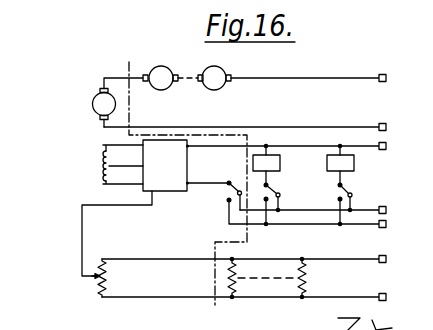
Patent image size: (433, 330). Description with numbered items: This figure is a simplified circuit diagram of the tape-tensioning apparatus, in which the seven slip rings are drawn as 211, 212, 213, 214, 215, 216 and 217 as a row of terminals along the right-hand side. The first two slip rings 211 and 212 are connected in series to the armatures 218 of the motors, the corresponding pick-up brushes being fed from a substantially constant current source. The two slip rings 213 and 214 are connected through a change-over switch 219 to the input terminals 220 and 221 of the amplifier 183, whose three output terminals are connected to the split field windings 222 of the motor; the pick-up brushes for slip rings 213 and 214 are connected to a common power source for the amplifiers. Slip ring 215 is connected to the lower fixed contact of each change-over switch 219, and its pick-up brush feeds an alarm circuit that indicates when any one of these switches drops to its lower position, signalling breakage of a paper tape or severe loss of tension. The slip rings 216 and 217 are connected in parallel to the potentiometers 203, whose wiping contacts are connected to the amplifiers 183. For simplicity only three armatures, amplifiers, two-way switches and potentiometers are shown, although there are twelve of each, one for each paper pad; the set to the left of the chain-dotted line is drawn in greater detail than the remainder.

The amplifier 183 is at (274, 168).
The potentiometer 203 is at (93, 286).
The slip ring 211 is at (322, 78).
The slip ring 212 is at (258, 126).
The slip ring 213 is at (300, 146).
The slip ring 214 is at (326, 210).
The slip ring 215 is at (321, 216).
The slip ring 216 is at (257, 259).
The slip ring 217 is at (257, 297).
The armature 218 is at (92, 104).
The change-over switch 219 is at (241, 187).
The input terminal 220 is at (190, 187).
The input terminal 221 is at (190, 144).
The split field winding 222 is at (102, 172).